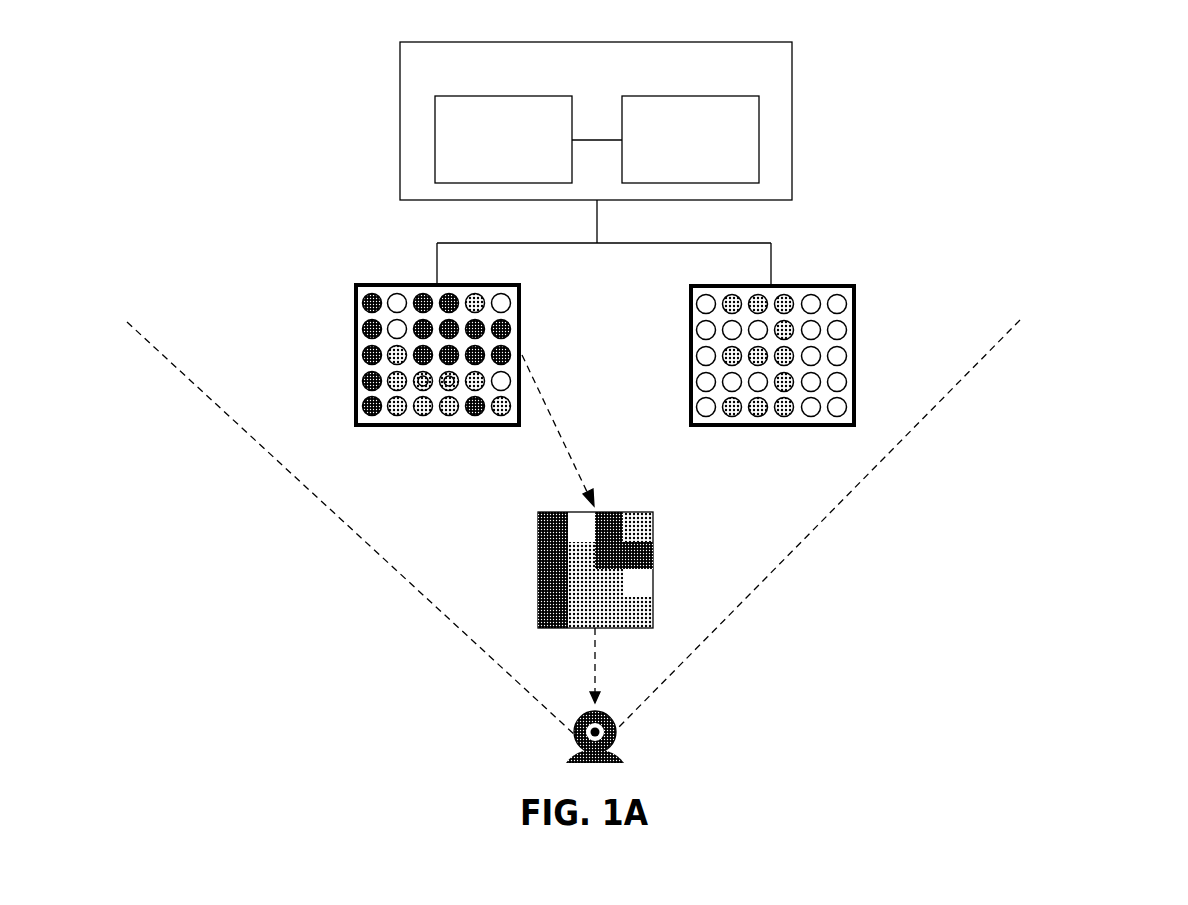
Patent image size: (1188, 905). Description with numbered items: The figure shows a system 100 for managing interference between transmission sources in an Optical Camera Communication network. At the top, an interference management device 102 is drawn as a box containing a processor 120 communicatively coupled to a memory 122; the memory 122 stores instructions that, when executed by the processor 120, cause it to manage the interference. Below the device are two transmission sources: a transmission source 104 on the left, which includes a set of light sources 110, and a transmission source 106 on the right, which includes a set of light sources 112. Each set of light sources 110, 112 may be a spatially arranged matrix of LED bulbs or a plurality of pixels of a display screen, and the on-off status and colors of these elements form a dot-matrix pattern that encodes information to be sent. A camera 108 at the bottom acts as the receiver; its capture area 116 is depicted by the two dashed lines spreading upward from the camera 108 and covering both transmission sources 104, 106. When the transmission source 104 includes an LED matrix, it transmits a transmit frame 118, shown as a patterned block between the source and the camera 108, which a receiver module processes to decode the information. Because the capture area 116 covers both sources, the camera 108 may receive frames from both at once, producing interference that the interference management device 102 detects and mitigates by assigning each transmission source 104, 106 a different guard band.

The system 100 is at (1033, 93).
The interference management device 102 is at (788, 70).
The transmission source 104 is at (521, 304).
The transmission source 106 is at (856, 354).
The camera 108 is at (628, 758).
The set of light sources 110 is at (512, 430).
The set of light sources 112 is at (847, 430).
The capture area 116 is at (353, 530).
The transmit frame 118 is at (538, 568).
The processor 120 is at (710, 159).
The memory 122 is at (566, 151).